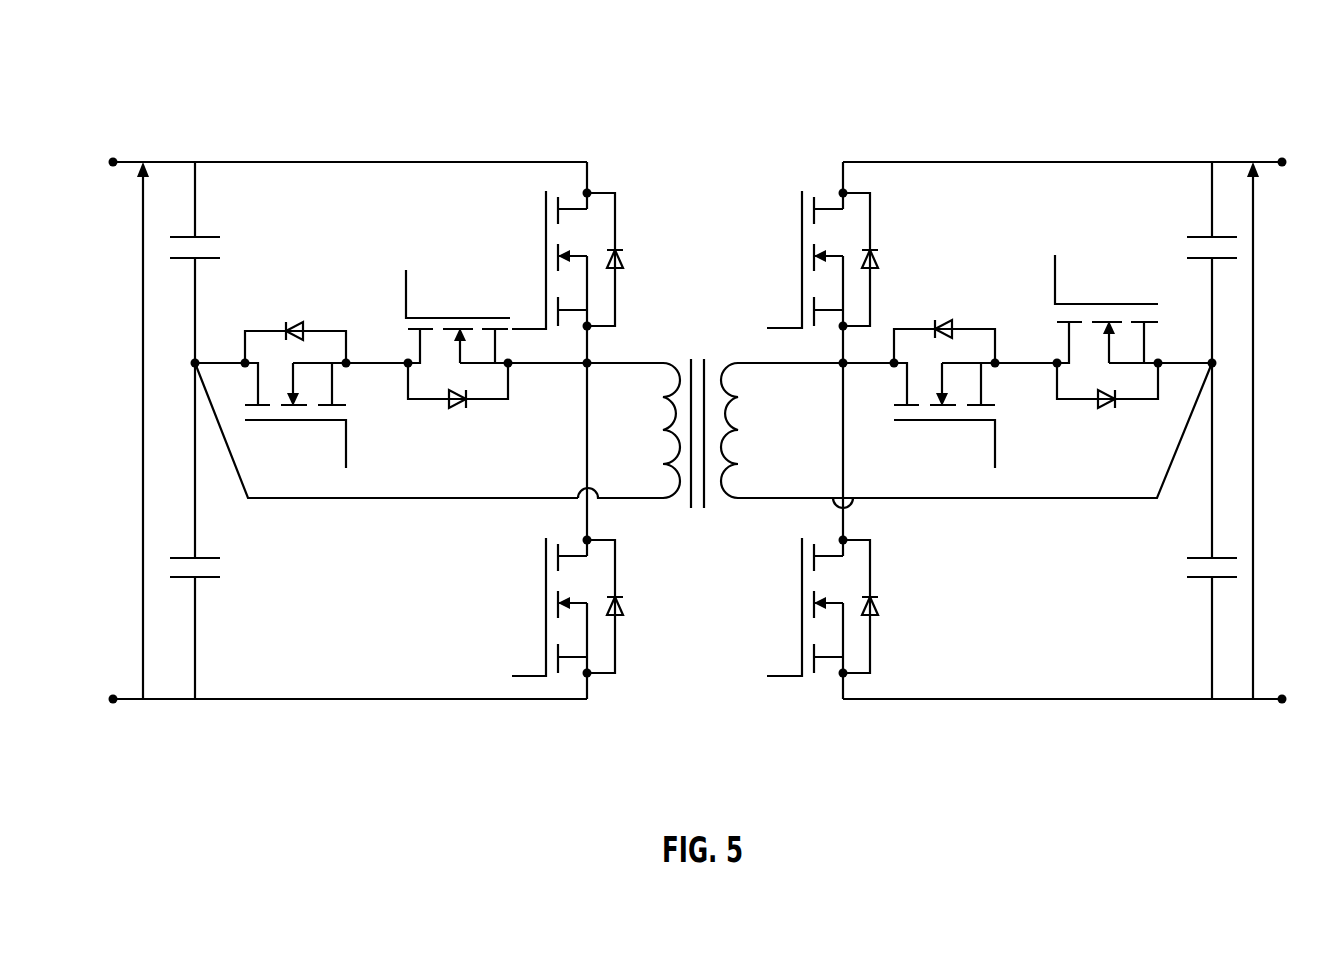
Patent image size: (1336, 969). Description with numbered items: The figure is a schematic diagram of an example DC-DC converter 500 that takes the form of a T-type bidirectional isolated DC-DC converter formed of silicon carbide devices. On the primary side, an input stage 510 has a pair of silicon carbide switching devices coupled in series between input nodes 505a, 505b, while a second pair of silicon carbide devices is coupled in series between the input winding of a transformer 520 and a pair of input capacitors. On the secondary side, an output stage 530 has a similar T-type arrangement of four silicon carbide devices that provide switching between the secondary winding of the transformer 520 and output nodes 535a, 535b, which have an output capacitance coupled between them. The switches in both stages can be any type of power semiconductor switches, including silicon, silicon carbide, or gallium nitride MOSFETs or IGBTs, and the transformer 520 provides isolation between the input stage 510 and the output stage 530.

The DC-DC converter 500 is at (154, 63).
The input node 505a is at (113, 162).
The input node 505b is at (113, 699).
The input stage 510 is at (345, 152).
The transformer 520 is at (717, 339).
The output stage 530 is at (1152, 148).
The output node 535a is at (1282, 162).
The output node 535b is at (1282, 699).